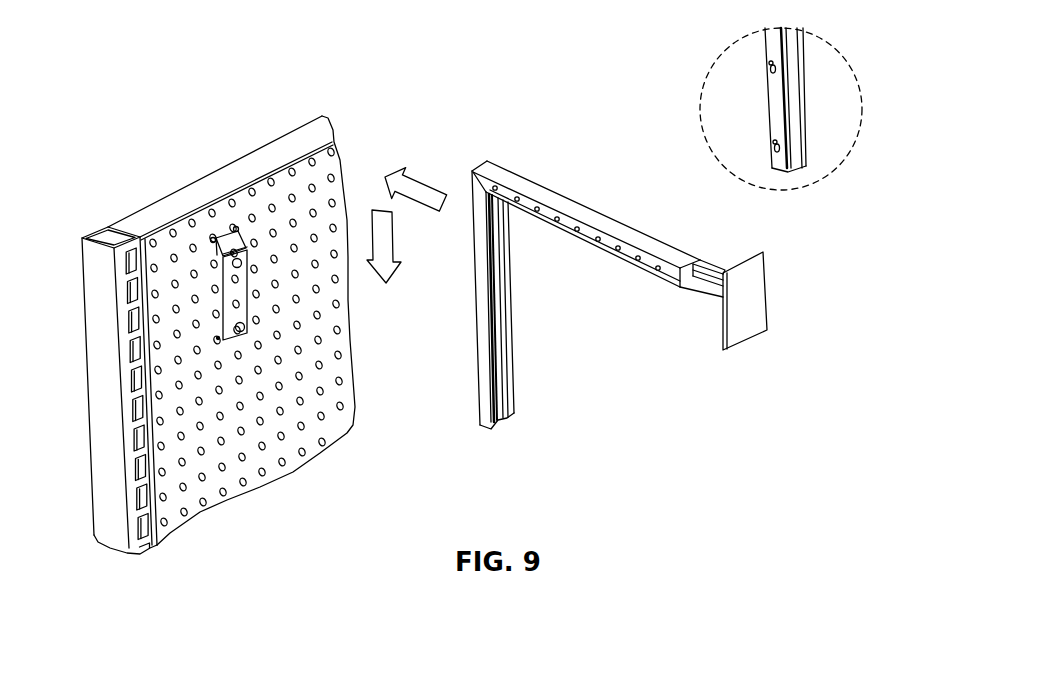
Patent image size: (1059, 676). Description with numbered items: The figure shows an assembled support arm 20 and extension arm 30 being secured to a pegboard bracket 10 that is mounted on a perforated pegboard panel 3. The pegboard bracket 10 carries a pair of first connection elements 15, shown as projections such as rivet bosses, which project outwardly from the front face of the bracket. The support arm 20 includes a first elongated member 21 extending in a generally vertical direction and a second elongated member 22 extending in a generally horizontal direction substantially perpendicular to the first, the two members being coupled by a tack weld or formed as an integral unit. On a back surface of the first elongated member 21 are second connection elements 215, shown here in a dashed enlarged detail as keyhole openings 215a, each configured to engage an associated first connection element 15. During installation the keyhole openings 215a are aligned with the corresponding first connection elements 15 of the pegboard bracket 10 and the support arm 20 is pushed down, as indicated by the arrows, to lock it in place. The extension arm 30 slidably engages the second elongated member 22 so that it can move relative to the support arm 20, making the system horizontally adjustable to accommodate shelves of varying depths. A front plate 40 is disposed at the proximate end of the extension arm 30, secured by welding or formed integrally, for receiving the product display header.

The pegboard panel 3 is at (187, 529).
The pegboard bracket 10 is at (220, 278).
The first connection elements 15 is at (235, 230).
The support arm 20 is at (556, 289).
The first elongated member 21 is at (477, 347).
The second elongated member 22 is at (602, 209).
The extension arm 30 is at (708, 298).
The front plate 40 is at (771, 282).
The second connection elements 215 is at (758, 107).
The keyhole openings 215a is at (771, 66).